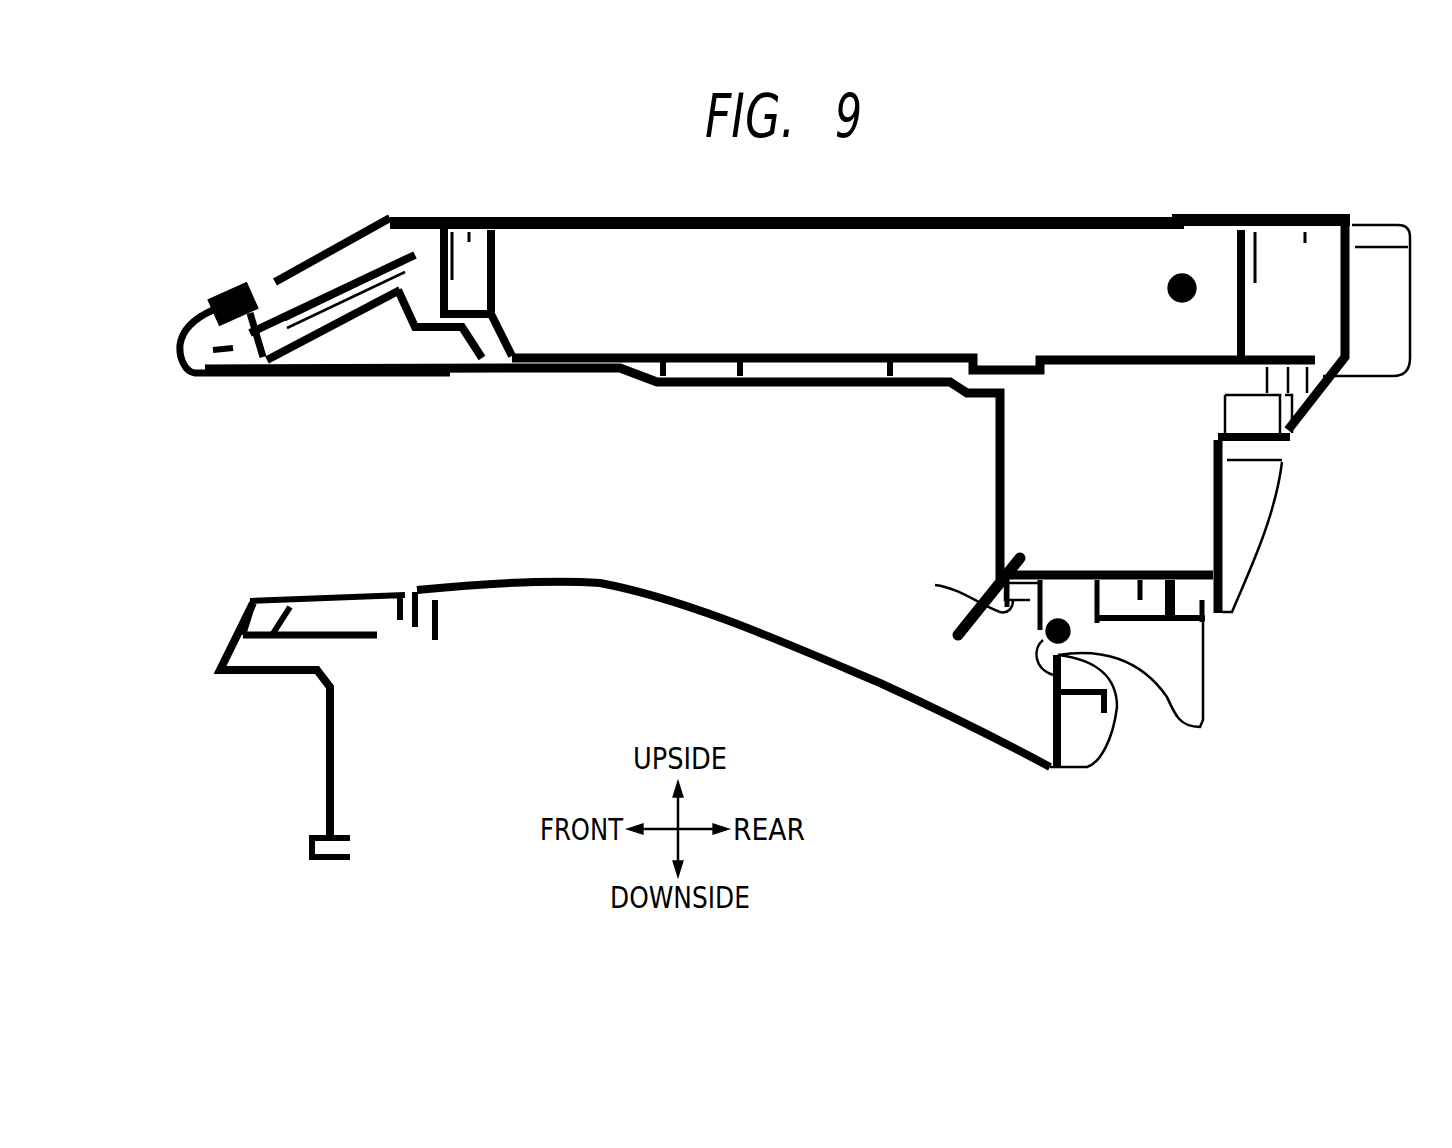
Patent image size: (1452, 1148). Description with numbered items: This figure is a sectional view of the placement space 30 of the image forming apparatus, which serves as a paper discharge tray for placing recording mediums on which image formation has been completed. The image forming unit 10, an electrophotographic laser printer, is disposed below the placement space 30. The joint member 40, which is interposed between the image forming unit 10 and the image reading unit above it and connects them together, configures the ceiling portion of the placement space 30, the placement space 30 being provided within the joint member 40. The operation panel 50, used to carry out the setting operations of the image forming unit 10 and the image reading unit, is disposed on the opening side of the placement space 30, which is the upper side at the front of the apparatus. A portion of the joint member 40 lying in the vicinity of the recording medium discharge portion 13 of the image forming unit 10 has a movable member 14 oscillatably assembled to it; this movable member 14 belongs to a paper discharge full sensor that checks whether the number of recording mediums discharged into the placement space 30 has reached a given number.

The image forming unit 10 is at (1125, 755).
The recording medium discharge portion 13 is at (1043, 640).
The movable member 14 is at (935, 585).
The placement space 30 is at (407, 447).
The joint member 40 is at (1310, 412).
The operation panel 50 is at (198, 299).